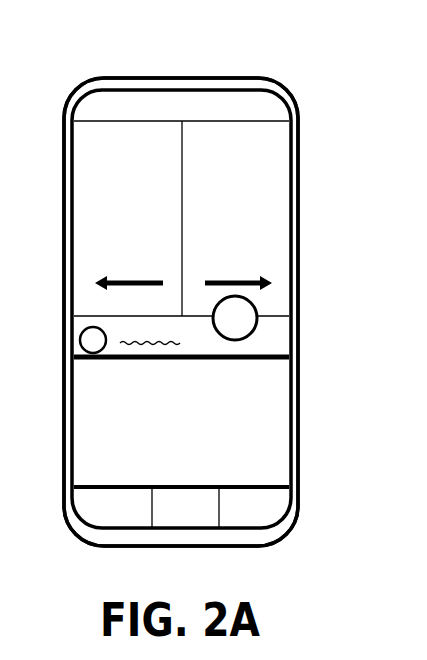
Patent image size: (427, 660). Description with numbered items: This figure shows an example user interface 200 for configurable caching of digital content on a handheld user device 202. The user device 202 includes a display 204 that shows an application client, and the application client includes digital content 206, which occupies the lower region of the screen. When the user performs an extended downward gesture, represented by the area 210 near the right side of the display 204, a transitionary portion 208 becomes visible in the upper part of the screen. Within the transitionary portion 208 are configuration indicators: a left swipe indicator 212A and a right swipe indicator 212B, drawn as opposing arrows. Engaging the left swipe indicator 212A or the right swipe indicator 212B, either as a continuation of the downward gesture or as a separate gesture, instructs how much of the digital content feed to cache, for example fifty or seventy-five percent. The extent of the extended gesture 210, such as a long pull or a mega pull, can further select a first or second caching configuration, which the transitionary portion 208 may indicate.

The user interface 200 is at (272, 56).
The user device 202 is at (298, 108).
The display 204 is at (294, 193).
The digital content 206 is at (181, 485).
The transitionary portion 208 is at (83, 187).
The extended gesture 210 is at (257, 324).
The left swipe indicator 212A is at (129, 268).
The right swipe indicator 212B is at (238, 268).